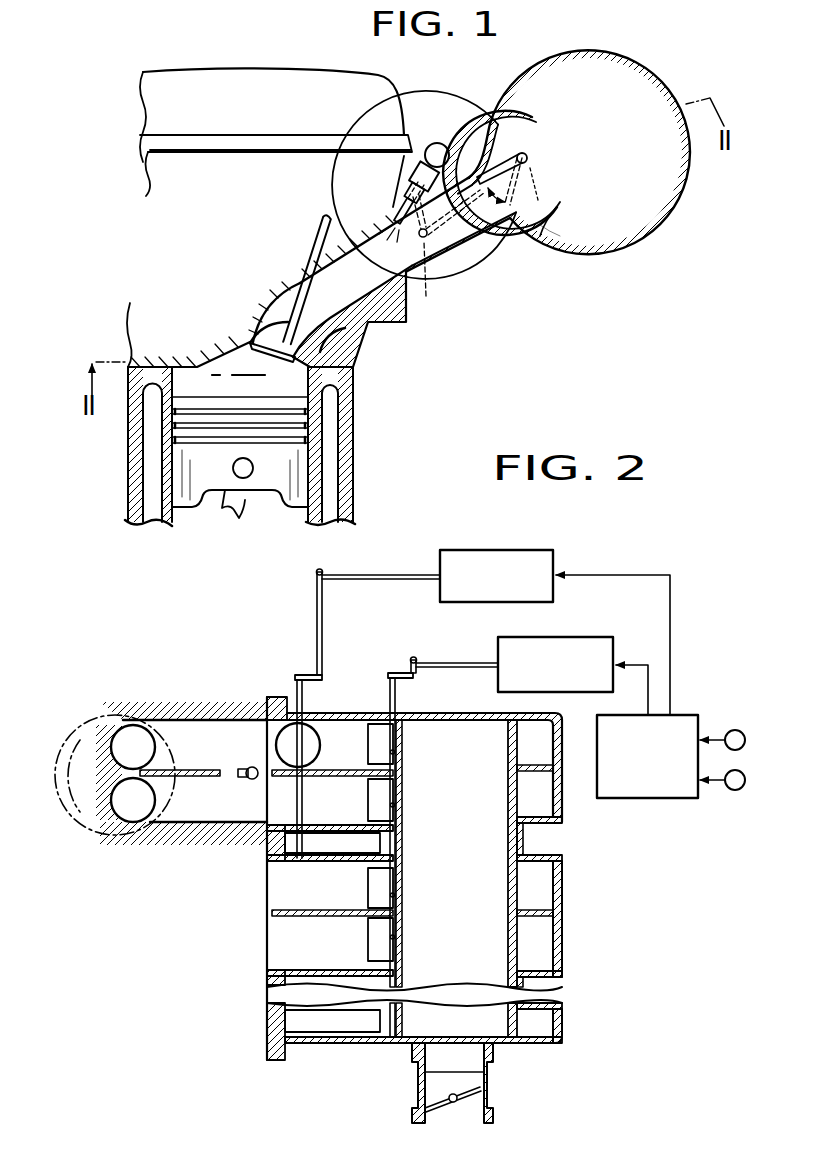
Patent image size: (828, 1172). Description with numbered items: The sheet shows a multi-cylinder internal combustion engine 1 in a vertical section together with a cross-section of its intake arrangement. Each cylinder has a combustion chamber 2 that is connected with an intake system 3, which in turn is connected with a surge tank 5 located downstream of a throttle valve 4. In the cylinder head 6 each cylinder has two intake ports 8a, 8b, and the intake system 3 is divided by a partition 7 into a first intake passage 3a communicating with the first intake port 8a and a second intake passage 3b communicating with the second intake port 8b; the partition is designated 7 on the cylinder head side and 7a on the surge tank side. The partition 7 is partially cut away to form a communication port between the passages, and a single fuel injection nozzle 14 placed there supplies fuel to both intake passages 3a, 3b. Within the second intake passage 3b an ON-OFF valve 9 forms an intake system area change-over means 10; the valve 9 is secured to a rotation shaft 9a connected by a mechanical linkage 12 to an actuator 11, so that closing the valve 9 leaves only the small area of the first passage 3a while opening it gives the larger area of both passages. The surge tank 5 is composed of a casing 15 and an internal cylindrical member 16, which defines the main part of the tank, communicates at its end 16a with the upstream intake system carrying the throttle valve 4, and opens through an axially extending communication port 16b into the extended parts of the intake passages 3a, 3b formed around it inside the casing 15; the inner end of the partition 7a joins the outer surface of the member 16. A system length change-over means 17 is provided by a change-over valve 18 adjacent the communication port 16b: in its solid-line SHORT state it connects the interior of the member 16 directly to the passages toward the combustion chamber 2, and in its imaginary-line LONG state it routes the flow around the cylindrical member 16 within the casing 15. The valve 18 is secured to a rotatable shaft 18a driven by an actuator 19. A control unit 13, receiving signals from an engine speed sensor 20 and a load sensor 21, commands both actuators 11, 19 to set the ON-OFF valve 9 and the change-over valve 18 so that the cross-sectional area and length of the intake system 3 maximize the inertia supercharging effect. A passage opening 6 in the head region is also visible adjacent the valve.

In FIG. 1, the multi-cylinder internal combustion engine 1 is at (360, 491).
In FIG. 2, the multi-cylinder internal combustion engine 1 is at (85, 712).
In FIG. 1, the combustion chamber 2 is at (200, 378).
In FIG. 2, the combustion chamber 2 is at (80, 833).
In FIG. 1, the intake system 3 is at (380, 256).
In FIG. 2, the intake system 3 is at (207, 738).
In FIG. 2, the first intake passage 3a is at (187, 807).
In FIG. 1, the second intake passage 3b is at (481, 226).
In FIG. 2, the second intake passage 3b is at (177, 742).
In FIG. 2, the throttle valve 4 is at (436, 1110).
In FIG. 1, the surge tank 5 is at (594, 258).
In FIG. 2, the surge tank 5 is at (561, 780).
In FIG. 1, the cylinder head 6 is at (359, 348).
In FIG. 1, the partition 7 is at (336, 250).
In FIG. 2, the partition 7 is at (202, 778).
In FIG. 1, the partition 7a is at (450, 205).
In FIG. 2, the partition 7a is at (323, 778).
In FIG. 2, the first intake port 8a is at (130, 807).
In FIG. 1, the second intake port 8b is at (258, 320).
In FIG. 2, the second intake port 8b is at (122, 745).
In FIG. 1, the ON-OFF valve 9 is at (448, 254).
In FIG. 2, the ON-OFF valve 9 is at (334, 722).
In FIG. 2, the rotation shaft 9a is at (291, 694).
In FIG. 1, the intake system area change-over means 10 is at (434, 242).
In FIG. 2, the intake system area change-over means 10 is at (337, 660).
In FIG. 2, the actuator 11 is at (530, 550).
In FIG. 2, the mechanical linkage 12 is at (317, 605).
In FIG. 2, the control unit 13 is at (666, 798).
In FIG. 1, the fuel injection nozzle 14 is at (413, 174).
In FIG. 2, the fuel injection nozzle 14 is at (250, 762).
In FIG. 1, the casing 15 is at (677, 209).
In FIG. 2, the casing 15 is at (562, 898).
In FIG. 1, the internal cylindrical member 16 is at (612, 96).
In FIG. 2, the internal cylindrical member 16 is at (506, 867).
In FIG. 2, the end of the cylindrical member 16a is at (470, 1053).
In FIG. 1, the communication port 16b is at (557, 210).
In FIG. 2, the communication port 16b is at (395, 739).
In FIG. 1, the system length change-over means 17 is at (498, 145).
In FIG. 2, the system length change-over means 17 is at (434, 659).
In FIG. 1, the change-over valve 18 is at (528, 160).
In FIG. 2, the change-over valve 18 is at (385, 805).
In FIG. 2, the rotatable shaft 18a is at (396, 696).
In FIG. 2, the actuator 19 is at (585, 637).
In FIG. 2, the engine speed sensor 20 is at (735, 730).
In FIG. 2, the load sensor 21 is at (735, 792).